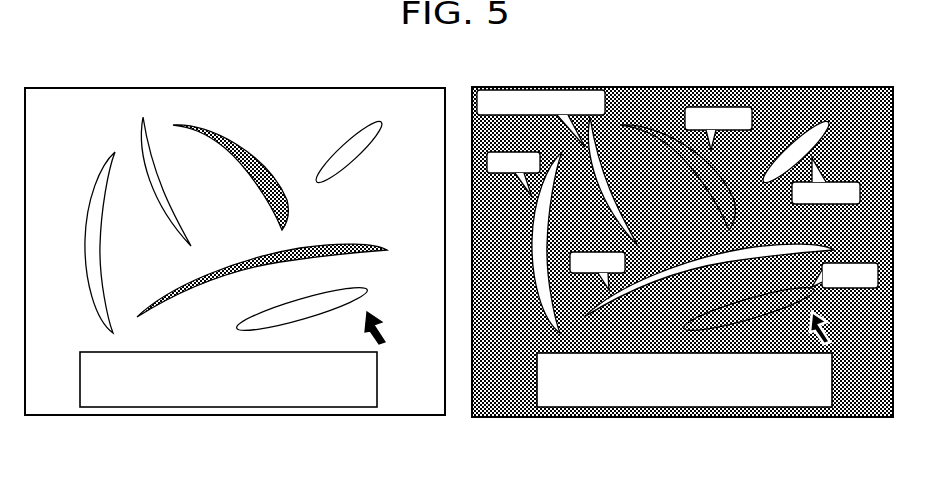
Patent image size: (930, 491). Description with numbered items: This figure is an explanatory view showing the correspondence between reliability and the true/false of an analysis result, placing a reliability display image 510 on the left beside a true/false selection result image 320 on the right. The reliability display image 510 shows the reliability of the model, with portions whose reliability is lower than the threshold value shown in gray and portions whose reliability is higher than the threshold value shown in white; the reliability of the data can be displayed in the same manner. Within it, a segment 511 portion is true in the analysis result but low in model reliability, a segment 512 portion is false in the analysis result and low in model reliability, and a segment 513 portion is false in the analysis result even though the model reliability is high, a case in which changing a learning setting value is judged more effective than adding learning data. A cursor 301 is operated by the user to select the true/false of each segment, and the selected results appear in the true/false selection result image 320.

The reliability display image 510 is at (72, 67).
The segment 511 is at (133, 318).
The segment 512 is at (245, 137).
The segment 513 is at (370, 127).
The cursor 301 is at (383, 343).
The true/false selection result image 320 is at (528, 67).